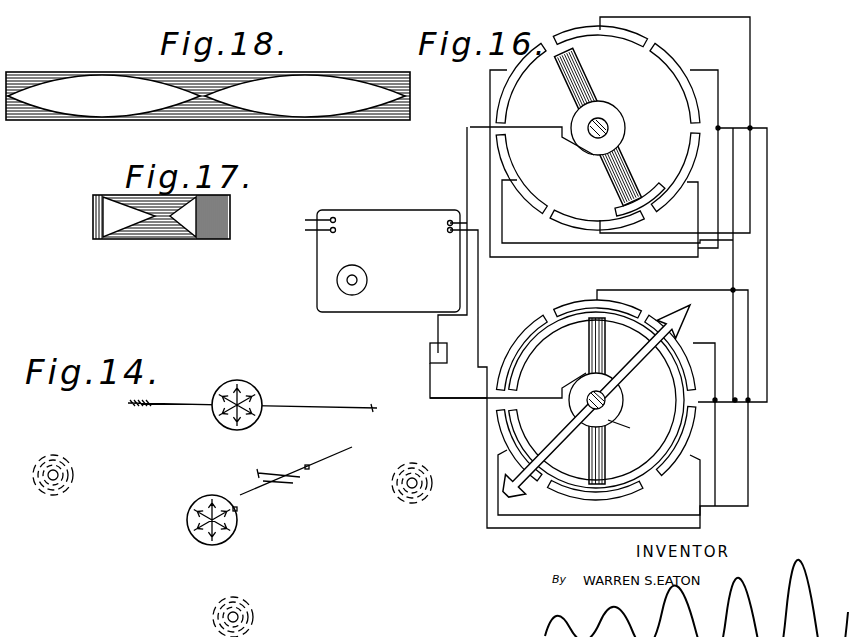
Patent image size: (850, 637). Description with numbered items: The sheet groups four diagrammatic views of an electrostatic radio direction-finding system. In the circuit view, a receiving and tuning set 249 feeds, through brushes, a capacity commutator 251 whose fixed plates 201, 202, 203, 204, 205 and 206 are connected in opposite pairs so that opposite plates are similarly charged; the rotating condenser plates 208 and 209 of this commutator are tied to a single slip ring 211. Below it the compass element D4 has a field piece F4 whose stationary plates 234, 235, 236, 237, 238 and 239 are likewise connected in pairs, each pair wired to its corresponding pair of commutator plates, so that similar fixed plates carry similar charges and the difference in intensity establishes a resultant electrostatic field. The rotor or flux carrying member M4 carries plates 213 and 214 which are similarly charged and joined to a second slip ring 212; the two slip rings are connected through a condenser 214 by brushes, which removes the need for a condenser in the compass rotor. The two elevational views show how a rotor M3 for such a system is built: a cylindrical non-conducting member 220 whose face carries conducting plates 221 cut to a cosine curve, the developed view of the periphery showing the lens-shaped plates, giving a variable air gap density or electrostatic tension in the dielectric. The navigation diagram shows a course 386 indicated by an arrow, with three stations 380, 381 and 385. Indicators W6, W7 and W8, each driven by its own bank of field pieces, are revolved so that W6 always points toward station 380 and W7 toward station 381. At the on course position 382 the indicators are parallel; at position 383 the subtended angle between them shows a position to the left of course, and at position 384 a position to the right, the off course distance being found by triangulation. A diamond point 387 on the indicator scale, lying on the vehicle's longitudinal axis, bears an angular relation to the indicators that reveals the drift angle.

In FIG. 18, the cylindrical non-conducting member 220 is at (35, 72).
In FIG. 17, the cylindrical non-conducting member 220 is at (159, 239).
In FIG. 18, the conducting plate 221 is at (104, 118).
In FIG. 17, the conducting plate 221 is at (93, 215).
In FIG. 18, the flux carrying member M3 is at (65, 135).
In FIG. 17, the flux carrying member M3 is at (240, 217).
In FIG. 16, the receiving and tuning set 249 is at (372, 205).
In FIG. 16, the condenser 214 is at (430, 358).
In FIG. 16, the commutator plate 203 is at (585, 32).
In FIG. 16, the commutator plate 201 is at (507, 96).
In FIG. 16, the commutator plate 205 is at (694, 107).
In FIG. 16, the commutator plate 202 is at (684, 150).
In FIG. 16, the commutator plate 204 is at (566, 219).
In FIG. 16, the commutator plate 206 is at (521, 188).
In FIG. 16, the commutator rotor condenser plate 209 is at (623, 204).
In FIG. 16, the commutator rotor condenser plate 208 is at (582, 47).
In FIG. 16, the slip ring 211 is at (623, 113).
In FIG. 16, the capacity commutator 251 is at (640, 80).
In FIG. 16, the field piece plate 234 is at (532, 331).
In FIG. 16, the field piece plate 236 is at (624, 303).
In FIG. 16, the field piece plate 238 is at (683, 343).
In FIG. 16, the field piece plate 235 is at (666, 471).
In FIG. 16, the field piece plate 237 is at (573, 498).
In FIG. 16, the field piece plate 239 is at (497, 420).
In FIG. 16, the flux carrying member plate 213 is at (565, 327).
In FIG. 16, the slip ring 212 is at (620, 418).
In FIG. 16, the field piece element F4 is at (572, 291).
In FIG. 16, the flux carrying member M4 is at (658, 376).
In FIG. 16, the compass element D4 is at (492, 440).
In FIG. 14, the course 386 is at (173, 405).
In FIG. 14, the off course position 383 is at (253, 391).
In FIG. 14, the off course position 384 is at (232, 538).
In FIG. 14, the diamond point 387 is at (308, 465).
In FIG. 14, the on course position 382 is at (300, 478).
In FIG. 14, the transmitting station 380 is at (70, 476).
In FIG. 14, the transmitting station 381 is at (391, 487).
In FIG. 14, the transmitting station 385 is at (250, 613).
In FIG. 14, the indicator W6 is at (222, 424).
In FIG. 14, the indicator W7 is at (263, 410).
In FIG. 14, the indicator W8 is at (226, 392).